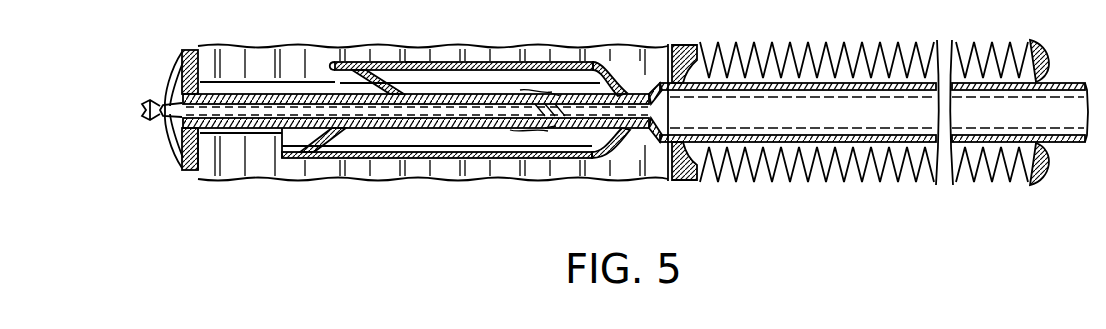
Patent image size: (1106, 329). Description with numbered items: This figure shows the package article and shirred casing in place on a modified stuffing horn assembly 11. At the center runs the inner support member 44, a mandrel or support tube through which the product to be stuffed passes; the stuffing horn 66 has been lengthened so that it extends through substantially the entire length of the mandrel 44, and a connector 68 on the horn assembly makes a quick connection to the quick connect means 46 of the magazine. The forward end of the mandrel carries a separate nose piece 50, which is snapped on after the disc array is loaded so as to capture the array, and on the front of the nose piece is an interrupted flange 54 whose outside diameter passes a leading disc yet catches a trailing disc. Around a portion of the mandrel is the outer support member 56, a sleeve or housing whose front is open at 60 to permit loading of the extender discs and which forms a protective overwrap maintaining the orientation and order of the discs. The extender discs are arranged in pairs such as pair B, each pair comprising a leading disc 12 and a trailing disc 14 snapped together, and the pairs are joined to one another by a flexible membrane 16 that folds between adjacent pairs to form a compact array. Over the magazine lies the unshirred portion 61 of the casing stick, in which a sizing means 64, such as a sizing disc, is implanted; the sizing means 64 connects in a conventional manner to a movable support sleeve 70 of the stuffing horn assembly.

The catheter assembly 11 is at (189, 44).
The leading disc 12 is at (183, 62).
The trailing disc 14 is at (200, 55).
The flexible membrane 16 is at (262, 135).
The inner support member 44 is at (487, 95).
The quick connect means 46 is at (624, 95).
The nose piece 50 is at (215, 135).
The interrupted flange 54 is at (183, 143).
The outer support member 56 is at (533, 165).
The open front of sleeve 60 is at (340, 60).
The unshirred portion of casing 61 is at (303, 48).
The sizing means 64 is at (690, 44).
The stuffing horn 66 is at (460, 103).
The connector 68 is at (648, 133).
The movable support sleeve 70 is at (850, 170).
The extender disc pair B is at (411, 51).